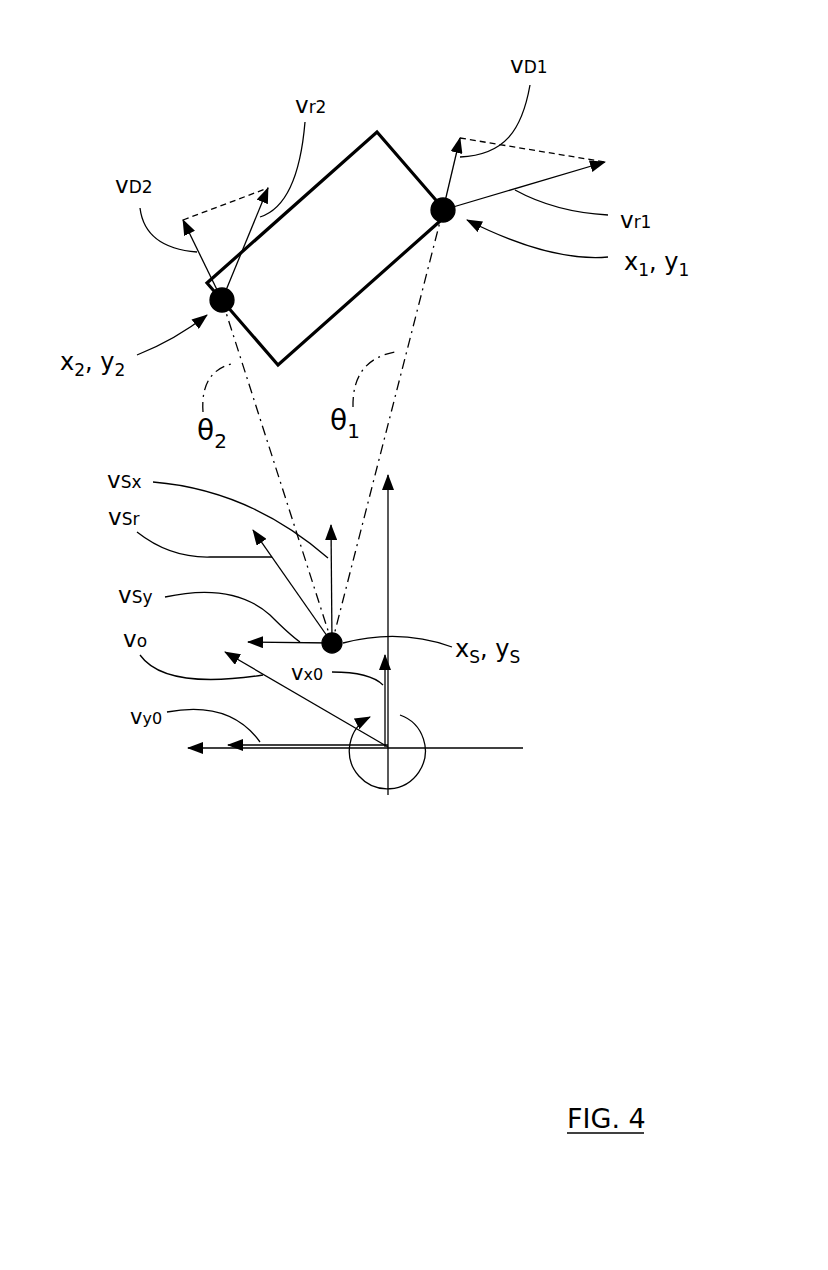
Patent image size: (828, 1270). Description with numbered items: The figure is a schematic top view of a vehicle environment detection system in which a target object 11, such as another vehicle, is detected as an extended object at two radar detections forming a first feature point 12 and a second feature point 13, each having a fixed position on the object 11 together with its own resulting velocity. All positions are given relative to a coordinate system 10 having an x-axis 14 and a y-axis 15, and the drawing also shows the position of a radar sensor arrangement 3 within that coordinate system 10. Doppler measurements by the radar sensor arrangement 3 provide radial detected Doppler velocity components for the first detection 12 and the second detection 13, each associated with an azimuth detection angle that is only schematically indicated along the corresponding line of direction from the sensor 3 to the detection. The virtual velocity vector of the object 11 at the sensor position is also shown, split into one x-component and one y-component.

The radar sensor arrangement 3 is at (340, 635).
The coordinate system 10 is at (343, 788).
The target object 11 is at (365, 190).
The first feature point 12 is at (448, 222).
The second feature point 13 is at (208, 302).
The x-axis 14 is at (390, 573).
The y-axis 15 is at (475, 750).